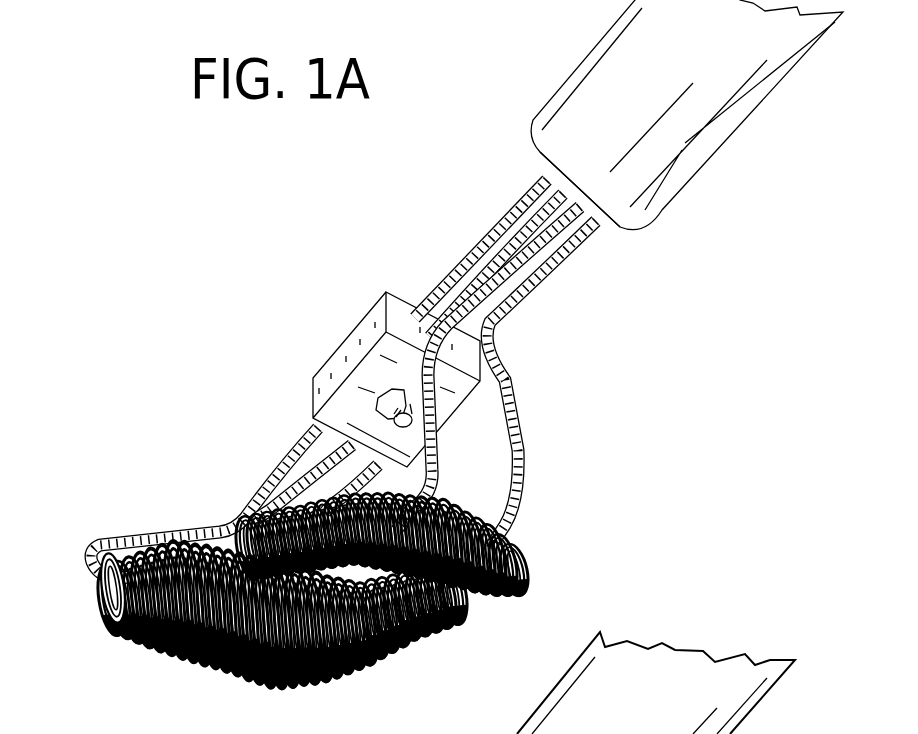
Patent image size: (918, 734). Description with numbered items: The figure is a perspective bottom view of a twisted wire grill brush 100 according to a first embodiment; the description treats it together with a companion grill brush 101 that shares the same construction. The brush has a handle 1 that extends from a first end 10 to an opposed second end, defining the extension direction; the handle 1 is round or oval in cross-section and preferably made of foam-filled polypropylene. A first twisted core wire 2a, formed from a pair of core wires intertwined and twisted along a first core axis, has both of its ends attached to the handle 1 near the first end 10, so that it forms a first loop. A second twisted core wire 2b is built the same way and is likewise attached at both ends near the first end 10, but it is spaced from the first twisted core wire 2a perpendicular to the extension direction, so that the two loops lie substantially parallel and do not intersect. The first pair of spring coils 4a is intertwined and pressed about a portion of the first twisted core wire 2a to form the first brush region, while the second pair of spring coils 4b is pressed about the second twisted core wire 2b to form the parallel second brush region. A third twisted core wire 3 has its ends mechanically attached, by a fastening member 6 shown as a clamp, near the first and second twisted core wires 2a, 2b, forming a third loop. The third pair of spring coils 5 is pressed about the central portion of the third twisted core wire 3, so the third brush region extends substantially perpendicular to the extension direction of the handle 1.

The handle 1 is at (717, 152).
The twisted wire grill brush 100 is at (743, 257).
The first end of the handle 10 is at (600, 222).
The first twisted core wire 2a is at (488, 243).
The second twisted core wire 2b is at (527, 272).
The third twisted core wire 3 is at (322, 440).
The fastening member 6 is at (337, 335).
The first pair of spring coils 4a is at (163, 660).
The second pair of spring coils 4b is at (383, 643).
The third pair of spring coils 5 is at (113, 623).
The grill brush 101 is at (658, 683).